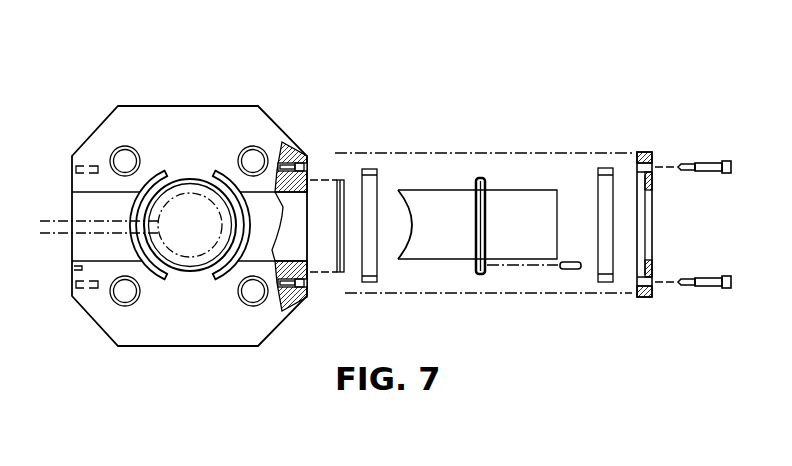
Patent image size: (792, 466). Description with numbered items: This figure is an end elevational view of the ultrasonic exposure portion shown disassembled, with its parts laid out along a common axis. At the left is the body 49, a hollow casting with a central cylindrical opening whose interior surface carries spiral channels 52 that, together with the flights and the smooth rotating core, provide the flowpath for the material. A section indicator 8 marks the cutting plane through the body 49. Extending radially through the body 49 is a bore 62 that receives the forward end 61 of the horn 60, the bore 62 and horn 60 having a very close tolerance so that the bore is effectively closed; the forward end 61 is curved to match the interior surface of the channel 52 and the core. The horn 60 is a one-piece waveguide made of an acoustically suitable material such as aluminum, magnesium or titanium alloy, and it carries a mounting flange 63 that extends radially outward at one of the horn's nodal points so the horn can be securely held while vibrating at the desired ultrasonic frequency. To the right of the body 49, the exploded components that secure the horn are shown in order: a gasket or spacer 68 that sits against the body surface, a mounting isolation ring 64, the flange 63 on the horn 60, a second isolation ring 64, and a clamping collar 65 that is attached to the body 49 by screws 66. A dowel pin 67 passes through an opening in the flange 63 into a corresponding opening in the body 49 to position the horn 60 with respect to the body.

The section line 8- 8 is at (41, 267).
The body 49 is at (167, 328).
The channels 52 is at (162, 170).
The horn 60 is at (517, 210).
The forward end 61 is at (400, 222).
The bore 62 is at (284, 261).
The mounting flange 63 is at (481, 180).
The mounting isolation ring 64 is at (370, 168).
The clamping collar 65 is at (642, 152).
The screws 66 is at (710, 163).
The dowel pin 67 is at (573, 269).
The gasket or spacer 68 is at (342, 180).